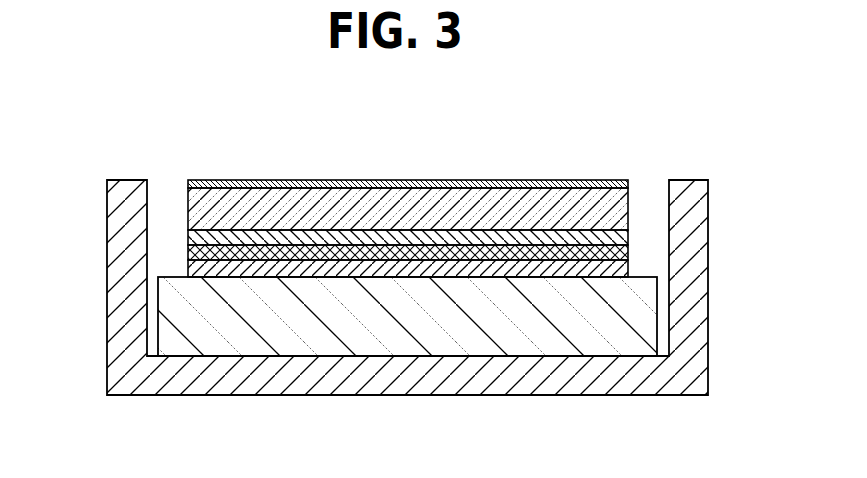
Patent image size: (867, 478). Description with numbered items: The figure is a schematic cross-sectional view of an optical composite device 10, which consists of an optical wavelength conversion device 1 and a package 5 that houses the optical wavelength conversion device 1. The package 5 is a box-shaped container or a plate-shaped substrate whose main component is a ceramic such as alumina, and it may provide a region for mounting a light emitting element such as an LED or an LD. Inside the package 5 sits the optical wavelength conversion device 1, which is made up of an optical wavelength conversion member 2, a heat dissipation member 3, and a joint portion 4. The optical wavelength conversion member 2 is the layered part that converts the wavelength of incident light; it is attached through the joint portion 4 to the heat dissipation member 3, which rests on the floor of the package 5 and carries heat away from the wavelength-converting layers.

The optical composite device 10 is at (438, 253).
The optical wavelength conversion device 1 is at (389, 271).
The optical wavelength conversion member 2 is at (185, 208).
The heat dissipation member 3 is at (433, 337).
The joint portion 4 is at (565, 275).
The package 5 is at (695, 242).